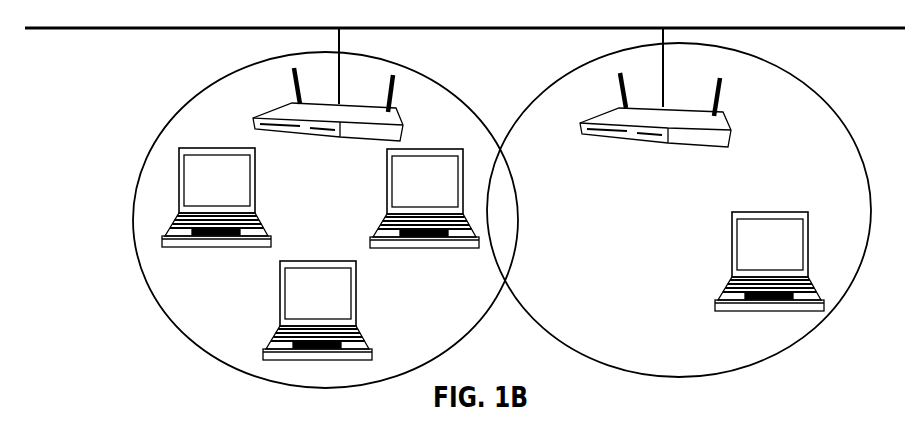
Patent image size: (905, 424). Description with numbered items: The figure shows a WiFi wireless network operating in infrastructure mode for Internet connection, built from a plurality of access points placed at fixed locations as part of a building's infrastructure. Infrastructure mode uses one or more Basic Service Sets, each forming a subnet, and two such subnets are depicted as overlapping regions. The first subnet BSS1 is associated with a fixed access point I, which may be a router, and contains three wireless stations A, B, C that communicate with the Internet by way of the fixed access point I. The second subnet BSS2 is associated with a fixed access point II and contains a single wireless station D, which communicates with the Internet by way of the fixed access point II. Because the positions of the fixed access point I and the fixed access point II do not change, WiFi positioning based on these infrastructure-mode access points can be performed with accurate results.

The wireless station A is at (216, 197).
The wireless station B is at (424, 198).
The wireless station C is at (317, 310).
The wireless station D is at (769, 261).
The fixed access point I is at (328, 99).
The fixed access point II is at (655, 102).
The first subnet BSS1 is at (325, 220).
The second subnet BSS2 is at (679, 210).